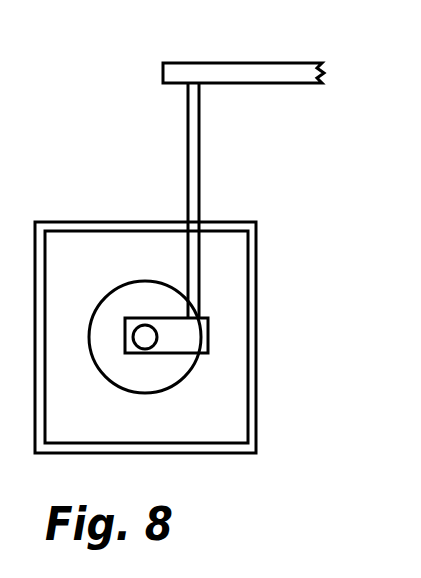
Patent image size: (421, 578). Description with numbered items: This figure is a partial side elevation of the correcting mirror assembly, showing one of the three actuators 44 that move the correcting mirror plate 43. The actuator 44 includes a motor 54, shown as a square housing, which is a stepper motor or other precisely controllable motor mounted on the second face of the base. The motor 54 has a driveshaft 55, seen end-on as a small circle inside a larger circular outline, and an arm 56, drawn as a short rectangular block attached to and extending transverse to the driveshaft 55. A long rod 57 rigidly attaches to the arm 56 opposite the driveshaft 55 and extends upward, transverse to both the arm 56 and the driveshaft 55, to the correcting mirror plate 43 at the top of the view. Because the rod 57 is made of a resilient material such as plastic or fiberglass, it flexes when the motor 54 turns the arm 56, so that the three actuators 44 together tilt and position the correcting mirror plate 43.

The correcting mirror plate 43 is at (287, 83).
The actuator 44 is at (102, 85).
The motor 54 is at (237, 290).
The driveshaft 55 is at (142, 342).
The arm 56 is at (202, 340).
The rod 57 is at (192, 146).